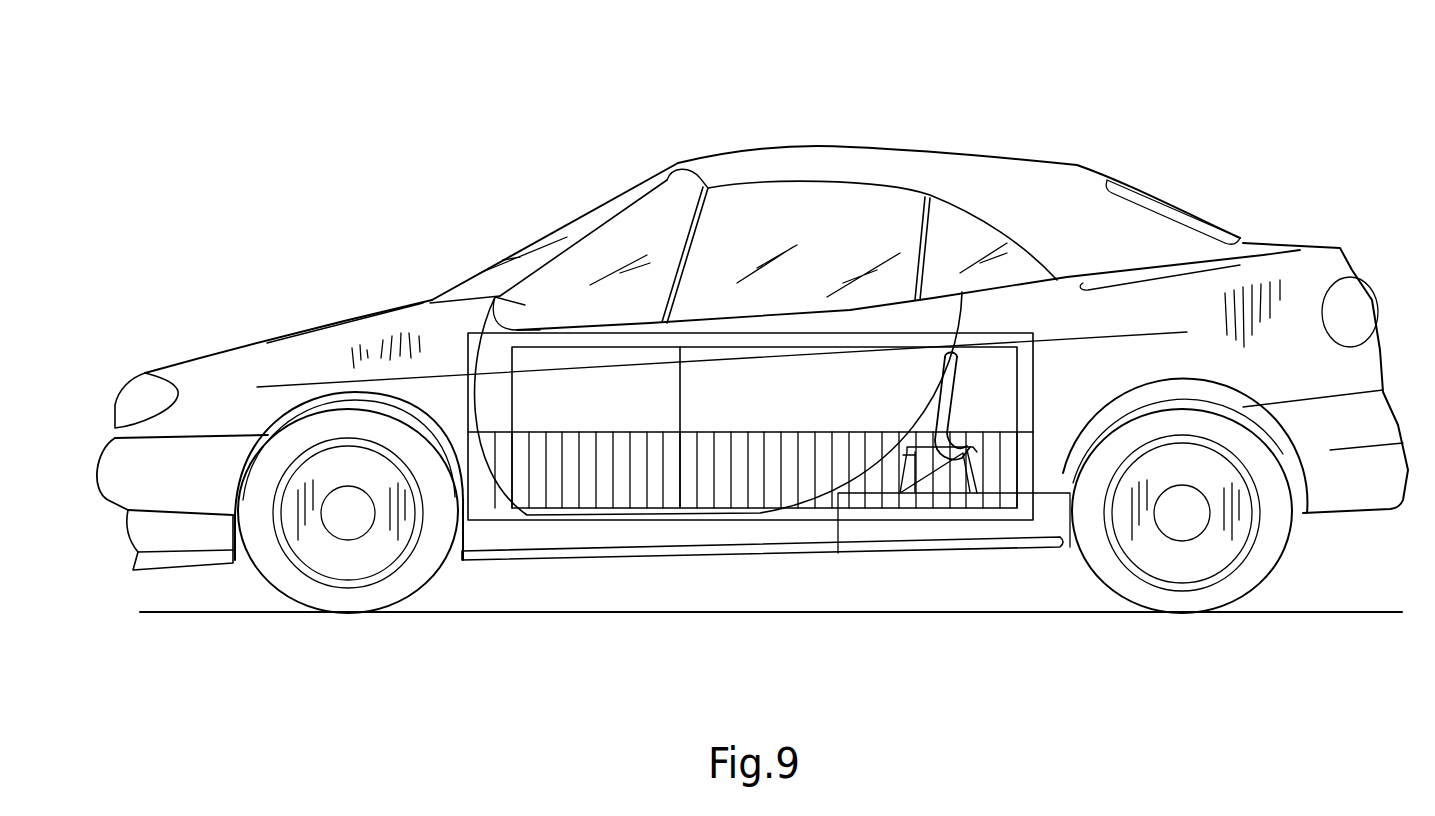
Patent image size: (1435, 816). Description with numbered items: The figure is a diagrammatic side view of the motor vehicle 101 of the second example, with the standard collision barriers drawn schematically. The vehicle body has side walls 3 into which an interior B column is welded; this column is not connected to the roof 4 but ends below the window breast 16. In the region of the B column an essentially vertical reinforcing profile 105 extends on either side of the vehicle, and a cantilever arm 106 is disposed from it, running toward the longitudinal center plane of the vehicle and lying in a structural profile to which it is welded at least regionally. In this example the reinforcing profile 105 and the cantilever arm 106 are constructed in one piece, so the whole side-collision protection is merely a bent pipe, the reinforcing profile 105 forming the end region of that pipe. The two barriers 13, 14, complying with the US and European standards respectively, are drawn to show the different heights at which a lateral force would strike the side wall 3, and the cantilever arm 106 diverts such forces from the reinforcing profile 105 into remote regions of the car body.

The side wall 3 is at (1083, 384).
The roof 4 is at (973, 192).
The barrier 13 is at (1003, 332).
The barrier 14 is at (510, 402).
The window breast 16 is at (962, 292).
The motor vehicle 101 is at (1206, 168).
The vertical reinforcing profile 105 is at (957, 392).
The cantilever arm 106 is at (959, 445).